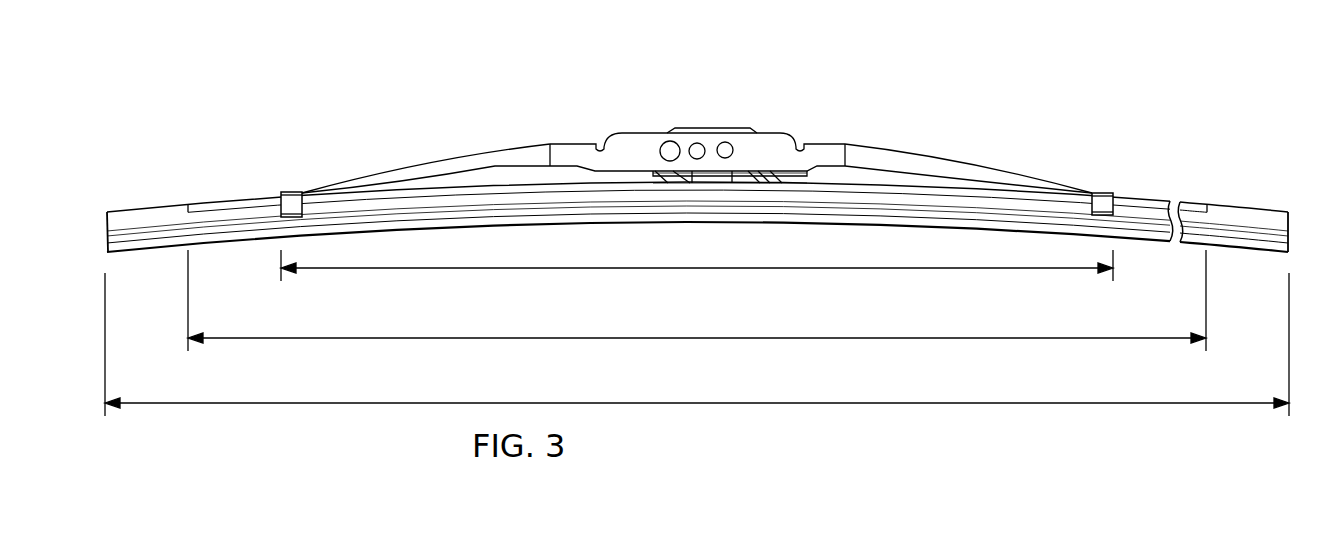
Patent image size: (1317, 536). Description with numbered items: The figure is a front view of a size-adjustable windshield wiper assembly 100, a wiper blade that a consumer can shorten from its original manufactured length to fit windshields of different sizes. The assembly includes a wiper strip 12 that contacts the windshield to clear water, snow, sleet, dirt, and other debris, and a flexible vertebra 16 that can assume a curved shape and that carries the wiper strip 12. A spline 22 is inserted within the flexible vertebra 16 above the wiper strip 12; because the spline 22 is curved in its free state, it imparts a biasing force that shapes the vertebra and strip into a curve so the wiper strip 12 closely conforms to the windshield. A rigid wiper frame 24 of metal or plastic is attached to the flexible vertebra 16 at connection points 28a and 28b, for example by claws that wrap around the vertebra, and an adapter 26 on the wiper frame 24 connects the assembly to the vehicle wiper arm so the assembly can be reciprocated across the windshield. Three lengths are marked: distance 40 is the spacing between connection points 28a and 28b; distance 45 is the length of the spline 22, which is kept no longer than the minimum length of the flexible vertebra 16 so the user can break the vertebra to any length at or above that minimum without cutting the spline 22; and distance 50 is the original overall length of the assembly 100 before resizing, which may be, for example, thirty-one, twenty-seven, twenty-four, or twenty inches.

The size-adjustable windshield wiper assembly 100 is at (510, 60).
The wiper strip 12 is at (138, 232).
The flexible vertebra 16 is at (1233, 206).
The spline 22 is at (1157, 203).
The wiper frame 24 is at (918, 153).
The adapter 26 is at (721, 129).
The connection point 28a is at (292, 193).
The connection point 28b is at (1102, 193).
The distance 40 is at (697, 271).
The distance 45 is at (697, 341).
The distance 50 is at (697, 406).